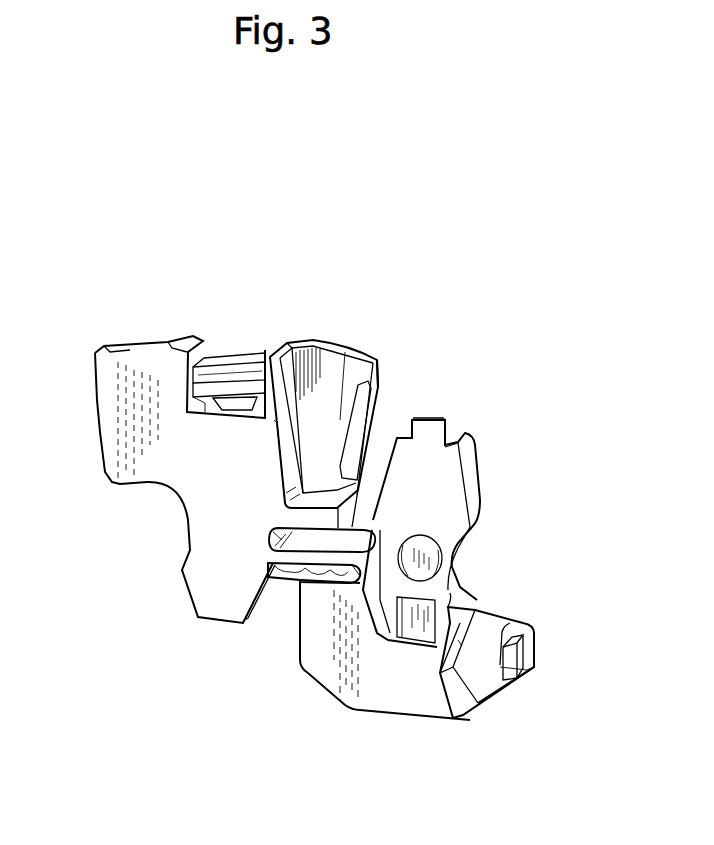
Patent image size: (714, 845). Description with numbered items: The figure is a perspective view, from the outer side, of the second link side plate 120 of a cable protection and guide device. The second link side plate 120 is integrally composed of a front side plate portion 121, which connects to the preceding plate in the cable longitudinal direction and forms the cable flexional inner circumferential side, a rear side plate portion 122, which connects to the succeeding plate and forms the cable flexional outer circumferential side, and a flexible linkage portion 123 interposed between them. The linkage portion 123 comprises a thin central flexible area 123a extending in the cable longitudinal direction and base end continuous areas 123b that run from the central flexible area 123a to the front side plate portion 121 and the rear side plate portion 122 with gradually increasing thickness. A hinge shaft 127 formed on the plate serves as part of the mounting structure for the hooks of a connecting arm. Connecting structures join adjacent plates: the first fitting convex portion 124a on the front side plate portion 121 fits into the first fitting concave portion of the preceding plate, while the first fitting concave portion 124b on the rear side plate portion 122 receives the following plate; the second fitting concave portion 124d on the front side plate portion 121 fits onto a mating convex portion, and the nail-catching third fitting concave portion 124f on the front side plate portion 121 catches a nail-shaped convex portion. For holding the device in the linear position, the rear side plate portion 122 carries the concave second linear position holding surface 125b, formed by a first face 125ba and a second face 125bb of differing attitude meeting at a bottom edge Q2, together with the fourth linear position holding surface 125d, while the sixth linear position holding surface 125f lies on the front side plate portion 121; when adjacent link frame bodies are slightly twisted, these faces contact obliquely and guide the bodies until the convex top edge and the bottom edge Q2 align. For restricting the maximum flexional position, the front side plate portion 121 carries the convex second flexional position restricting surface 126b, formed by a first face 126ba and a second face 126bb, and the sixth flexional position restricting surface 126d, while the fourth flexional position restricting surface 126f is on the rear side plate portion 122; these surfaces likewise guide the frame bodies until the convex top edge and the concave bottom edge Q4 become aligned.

The second link side plate 120 is at (99, 603).
The front side plate portion 121 is at (393, 683).
The rear side plate portion 122 is at (129, 484).
The linkage portion 123 is at (315, 716).
The central flexible area 123a is at (302, 584).
The base end continuous areas 123b is at (270, 572).
The first fitting convex portion 124a is at (432, 432).
The first fitting concave portion 124b is at (228, 407).
The second fitting concave portion 124d is at (442, 558).
The third fitting concave portion 124f is at (405, 620).
The second linear position holding surface 125b is at (360, 252).
The first face 125ba is at (283, 383).
The second face 125bb is at (317, 373).
The fourth linear position holding surface 125d is at (360, 445).
The sixth linear position holding surface 125f is at (498, 642).
The second flexional position restricting surface 126b is at (574, 712).
The first face 126ba is at (462, 645).
The second face 126bb is at (468, 700).
The sixth flexional position restricting surface 126d is at (527, 661).
The fourth flexional position restricting surface 126f is at (377, 407).
The hinge shaft 127 is at (227, 363).
The bottom edge of the concave shape Q2 is at (278, 427).
The bottom edge of the concave shape Q4 is at (459, 650).